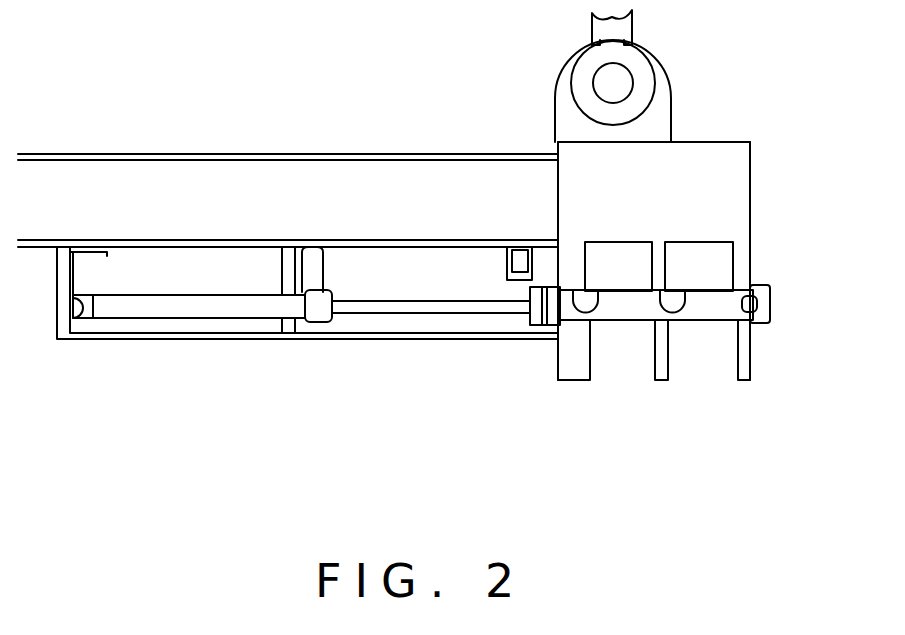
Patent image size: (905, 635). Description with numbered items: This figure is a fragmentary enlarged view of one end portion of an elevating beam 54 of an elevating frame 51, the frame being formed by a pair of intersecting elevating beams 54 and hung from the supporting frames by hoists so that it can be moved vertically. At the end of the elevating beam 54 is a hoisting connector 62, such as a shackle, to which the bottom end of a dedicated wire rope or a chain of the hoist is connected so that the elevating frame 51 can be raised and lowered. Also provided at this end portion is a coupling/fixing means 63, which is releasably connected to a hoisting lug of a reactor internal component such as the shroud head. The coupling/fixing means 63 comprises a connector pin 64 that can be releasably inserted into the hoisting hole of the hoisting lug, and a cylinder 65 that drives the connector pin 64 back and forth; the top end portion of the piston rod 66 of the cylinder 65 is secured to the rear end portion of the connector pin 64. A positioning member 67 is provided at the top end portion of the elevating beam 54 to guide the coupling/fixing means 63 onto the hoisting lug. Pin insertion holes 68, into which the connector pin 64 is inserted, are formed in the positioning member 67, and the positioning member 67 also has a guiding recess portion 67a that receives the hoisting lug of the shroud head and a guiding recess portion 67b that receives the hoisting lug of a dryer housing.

The elevating frame 51 is at (333, 146).
The elevating beam 54 is at (78, 153).
The hoisting connector 62 is at (672, 80).
The coupling/fixing means 63 is at (453, 360).
The connector pin 64 is at (618, 322).
The cylinder 65 is at (170, 297).
The piston rod 66 is at (442, 300).
The positioning member 67 is at (704, 378).
The guiding recess portion 67a is at (633, 355).
The guiding recess portion 67b is at (716, 350).
The pin insertion hole 68 is at (612, 292).